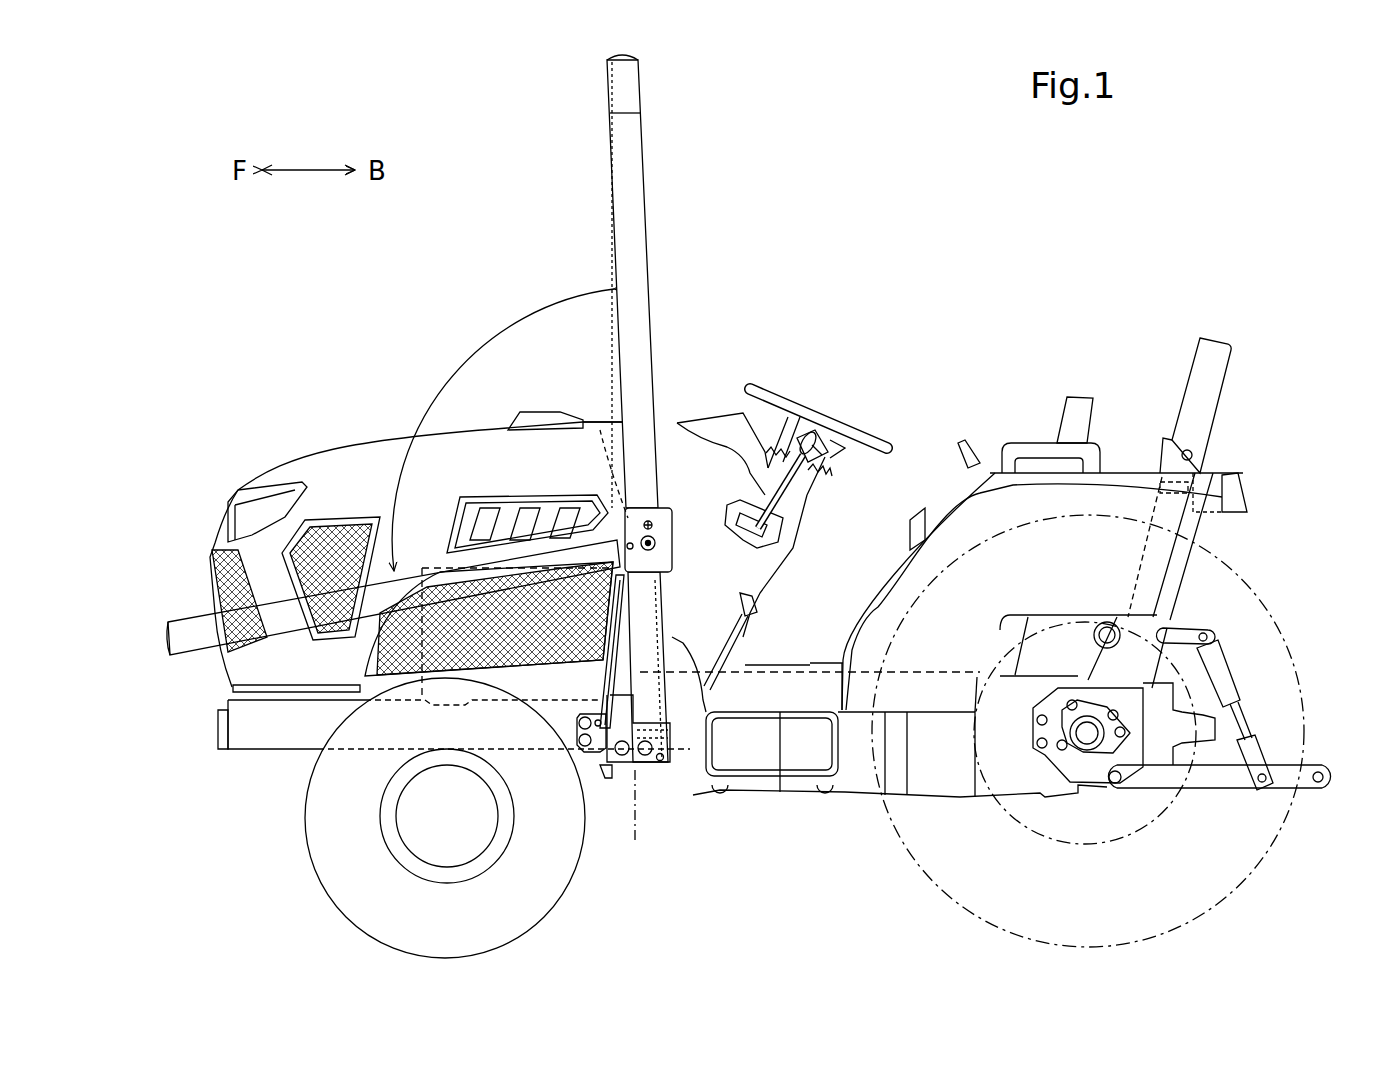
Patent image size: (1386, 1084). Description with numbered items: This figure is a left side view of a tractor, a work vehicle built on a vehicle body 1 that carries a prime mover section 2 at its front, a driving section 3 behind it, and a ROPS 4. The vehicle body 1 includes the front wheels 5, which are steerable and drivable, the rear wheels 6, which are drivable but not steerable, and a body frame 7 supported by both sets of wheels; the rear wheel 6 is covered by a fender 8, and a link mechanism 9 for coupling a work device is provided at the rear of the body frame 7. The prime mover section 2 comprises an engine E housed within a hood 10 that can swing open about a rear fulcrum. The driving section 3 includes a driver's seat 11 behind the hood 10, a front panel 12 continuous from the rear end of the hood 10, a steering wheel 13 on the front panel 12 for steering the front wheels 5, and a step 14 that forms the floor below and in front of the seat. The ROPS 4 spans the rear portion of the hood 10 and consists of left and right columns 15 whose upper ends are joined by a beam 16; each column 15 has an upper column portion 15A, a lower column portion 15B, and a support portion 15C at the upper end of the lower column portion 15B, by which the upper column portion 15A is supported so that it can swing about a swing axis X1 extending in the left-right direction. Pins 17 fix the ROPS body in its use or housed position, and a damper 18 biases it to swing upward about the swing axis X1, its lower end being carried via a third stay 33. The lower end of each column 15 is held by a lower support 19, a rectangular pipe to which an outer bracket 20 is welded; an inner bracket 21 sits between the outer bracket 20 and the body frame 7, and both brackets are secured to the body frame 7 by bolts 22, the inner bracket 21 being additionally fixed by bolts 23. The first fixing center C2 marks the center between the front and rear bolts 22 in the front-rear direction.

The vehicle body 1 is at (268, 768).
The prime mover section 2 is at (245, 480).
The driving section 3 is at (895, 370).
The ROPS 4 is at (600, 108).
The front wheels 5 is at (322, 848).
The rear wheels 6 is at (1270, 870).
The body frame 7 is at (690, 790).
The fender 8 is at (1128, 472).
The link mechanism 9 is at (1290, 740).
The hood 10 is at (375, 468).
The driver's seat 11 is at (1080, 397).
The front panel 12 is at (717, 467).
The steering wheel 13 is at (818, 415).
The step 14 is at (800, 668).
The column 15 is at (652, 243).
The upper column portion 15A is at (633, 132).
The lower column portion 15B is at (662, 625).
The support portion 15C is at (672, 568).
The beam 16 is at (628, 52).
The pin 17 is at (646, 520).
The damper 18 is at (600, 432).
The lower support 19 is at (900, 754).
The outer bracket 20 is at (645, 768).
The inner bracket 21 is at (606, 715).
The bolts 22 is at (645, 756).
The bolts 23 is at (578, 740).
The third stay 33 is at (605, 770).
The first fixing center C2 is at (635, 817).
The engine E is at (455, 548).
The swing axis X1 is at (656, 545).